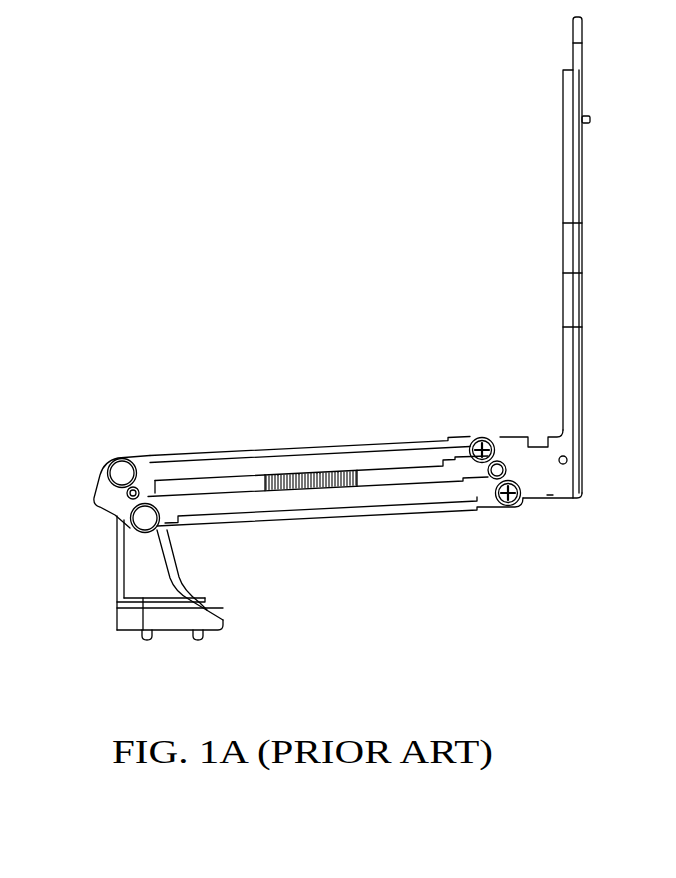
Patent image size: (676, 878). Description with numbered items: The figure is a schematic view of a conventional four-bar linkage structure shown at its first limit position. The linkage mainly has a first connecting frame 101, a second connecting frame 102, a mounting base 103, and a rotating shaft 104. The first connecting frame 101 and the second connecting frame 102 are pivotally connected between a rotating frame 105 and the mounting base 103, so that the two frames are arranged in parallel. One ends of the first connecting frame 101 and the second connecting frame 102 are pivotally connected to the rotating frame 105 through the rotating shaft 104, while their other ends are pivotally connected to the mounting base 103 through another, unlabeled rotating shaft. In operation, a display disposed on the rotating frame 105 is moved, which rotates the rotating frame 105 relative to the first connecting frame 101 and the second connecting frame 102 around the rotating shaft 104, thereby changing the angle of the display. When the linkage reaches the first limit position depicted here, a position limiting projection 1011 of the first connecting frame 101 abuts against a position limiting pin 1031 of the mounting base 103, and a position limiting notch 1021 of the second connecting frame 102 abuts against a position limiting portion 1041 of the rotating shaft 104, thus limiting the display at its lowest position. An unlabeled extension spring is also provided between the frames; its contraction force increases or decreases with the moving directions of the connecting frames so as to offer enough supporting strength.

The first connecting frame 101 is at (260, 466).
The position limiting projection 1011 is at (152, 492).
The second connecting frame 102 is at (291, 505).
The position limiting notch 1021 is at (487, 478).
The mounting base 103 is at (138, 570).
The position limiting pin 1031 is at (118, 494).
The rotating shaft 104 is at (510, 460).
The position limiting portion 1041 is at (517, 478).
The rotating frame 105 is at (567, 188).